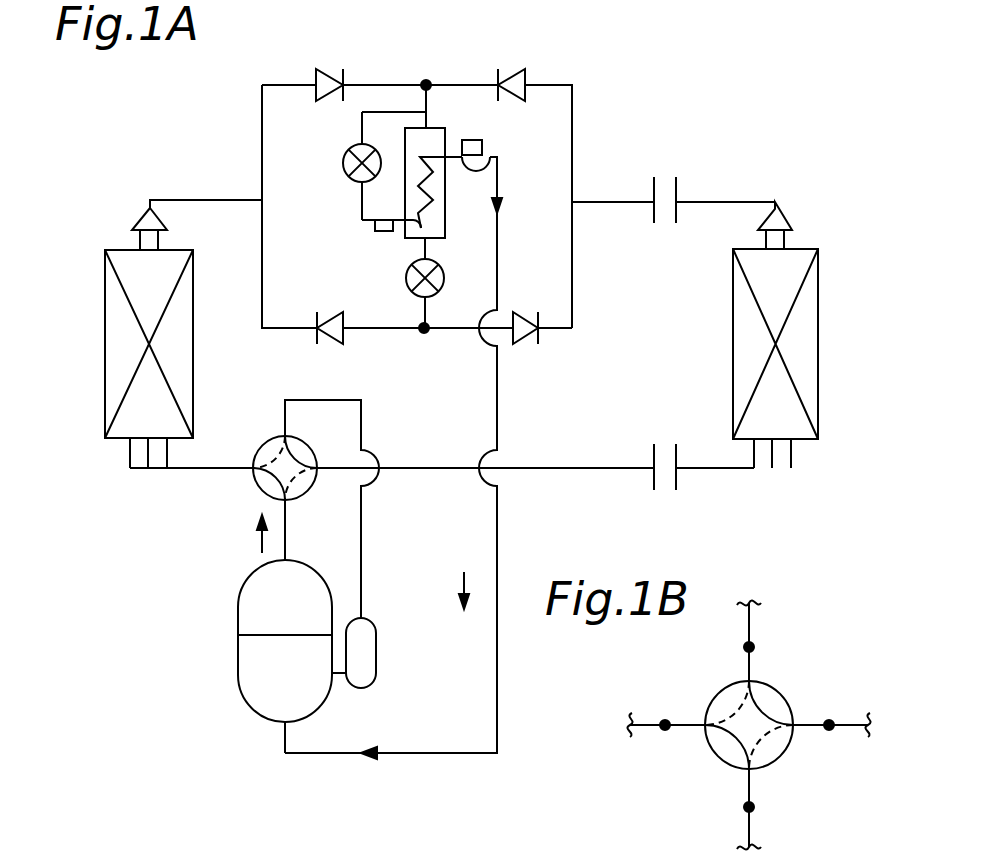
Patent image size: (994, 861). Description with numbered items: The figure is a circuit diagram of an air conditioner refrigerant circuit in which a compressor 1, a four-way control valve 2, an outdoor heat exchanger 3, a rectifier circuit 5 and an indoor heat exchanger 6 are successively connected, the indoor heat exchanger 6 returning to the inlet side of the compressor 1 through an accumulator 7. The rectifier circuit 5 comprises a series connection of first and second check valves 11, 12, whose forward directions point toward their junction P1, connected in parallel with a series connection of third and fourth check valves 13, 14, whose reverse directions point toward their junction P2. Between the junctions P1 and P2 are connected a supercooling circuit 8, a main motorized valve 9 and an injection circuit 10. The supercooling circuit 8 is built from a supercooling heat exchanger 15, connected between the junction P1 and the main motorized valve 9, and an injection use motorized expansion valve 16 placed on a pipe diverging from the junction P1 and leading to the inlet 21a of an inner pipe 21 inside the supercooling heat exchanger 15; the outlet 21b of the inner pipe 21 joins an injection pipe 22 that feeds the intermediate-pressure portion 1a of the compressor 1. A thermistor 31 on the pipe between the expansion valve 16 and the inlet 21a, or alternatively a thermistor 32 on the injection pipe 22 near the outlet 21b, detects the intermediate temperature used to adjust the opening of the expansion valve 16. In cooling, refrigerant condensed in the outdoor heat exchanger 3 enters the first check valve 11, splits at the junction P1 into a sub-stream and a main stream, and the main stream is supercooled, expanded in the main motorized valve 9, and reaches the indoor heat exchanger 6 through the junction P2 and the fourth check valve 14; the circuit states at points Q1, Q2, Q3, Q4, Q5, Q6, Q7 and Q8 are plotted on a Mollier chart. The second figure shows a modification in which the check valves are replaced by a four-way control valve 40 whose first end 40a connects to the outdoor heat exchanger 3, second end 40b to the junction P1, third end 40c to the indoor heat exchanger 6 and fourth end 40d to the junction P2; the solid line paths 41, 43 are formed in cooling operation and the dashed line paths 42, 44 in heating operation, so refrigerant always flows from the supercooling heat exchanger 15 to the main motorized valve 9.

In FIG. 1A, the compressor 1 is at (230, 615).
In FIG. 1A, the intermediate-pressure portion 1a is at (285, 727).
In FIG. 1A, the four-way control valve 2 is at (247, 488).
In FIG. 1A, the outdoor heat exchanger 3 is at (100, 341).
In FIG. 1A, the rectifier circuit 5 is at (253, 99).
In FIG. 1A, the indoor heat exchanger 6 is at (826, 260).
In FIG. 1A, the accumulator 7 is at (378, 648).
In FIG. 1A, the supercooling circuit 8 is at (291, 145).
In FIG. 1A, the main motorized valve 9 is at (444, 279).
In FIG. 1A, the injection circuit 10 is at (535, 197).
In FIG. 1A, the first check valve 11 is at (327, 68).
In FIG. 1A, the second check valve 12 is at (528, 73).
In FIG. 1A, the third check valve 13 is at (338, 312).
In FIG. 1A, the fourth check valve 14 is at (531, 346).
In FIG. 1A, the supercooling heat exchanger 15 is at (443, 135).
In FIG. 1A, the injection use motorized expansion valve 16 is at (343, 166).
In FIG. 1A, the inner pipe 21 is at (434, 191).
In FIG. 1A, the inlet 21a is at (414, 233).
In FIG. 1A, the outlet 21b is at (443, 140).
In FIG. 1A, the injection pipe 22 is at (499, 262).
In FIG. 1A, the thermistor 31 is at (374, 226).
In FIG. 1A, the thermistor 32 is at (482, 147).
In FIG. 1A, the junction P1 is at (427, 80).
In FIG. 1A, the junction P2 is at (424, 334).
In FIG. 1A, the point Q1 is at (287, 732).
In FIG. 1A, the point Q2 is at (289, 529).
In FIG. 1A, the point Q3 is at (424, 85).
In FIG. 1A, the point Q4 is at (361, 204).
In FIG. 1A, the point Q5 is at (499, 168).
In FIG. 1A, the point Q6 is at (416, 251).
In FIG. 1A, the point Q7 is at (419, 312).
In FIG. 1A, the point Q8 is at (340, 677).
In FIG. 1B, the four-way control valve 40 is at (793, 690).
In FIG. 1B, the first end 40a is at (665, 722).
In FIG. 1B, the second end 40b is at (745, 807).
In FIG. 1B, the third end 40c is at (831, 732).
In FIG. 1B, the fourth end 40d is at (754, 647).
In FIG. 1B, the solid line path 41 is at (730, 733).
In FIG. 1B, the dashed line path 42 is at (782, 756).
In FIG. 1B, the solid line path 43 is at (789, 705).
In FIG. 1B, the dashed line path 44 is at (716, 694).